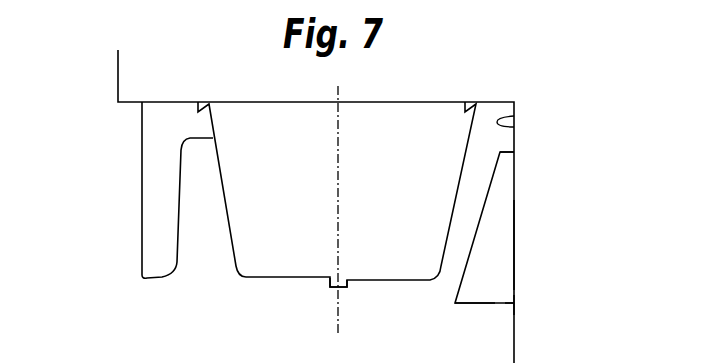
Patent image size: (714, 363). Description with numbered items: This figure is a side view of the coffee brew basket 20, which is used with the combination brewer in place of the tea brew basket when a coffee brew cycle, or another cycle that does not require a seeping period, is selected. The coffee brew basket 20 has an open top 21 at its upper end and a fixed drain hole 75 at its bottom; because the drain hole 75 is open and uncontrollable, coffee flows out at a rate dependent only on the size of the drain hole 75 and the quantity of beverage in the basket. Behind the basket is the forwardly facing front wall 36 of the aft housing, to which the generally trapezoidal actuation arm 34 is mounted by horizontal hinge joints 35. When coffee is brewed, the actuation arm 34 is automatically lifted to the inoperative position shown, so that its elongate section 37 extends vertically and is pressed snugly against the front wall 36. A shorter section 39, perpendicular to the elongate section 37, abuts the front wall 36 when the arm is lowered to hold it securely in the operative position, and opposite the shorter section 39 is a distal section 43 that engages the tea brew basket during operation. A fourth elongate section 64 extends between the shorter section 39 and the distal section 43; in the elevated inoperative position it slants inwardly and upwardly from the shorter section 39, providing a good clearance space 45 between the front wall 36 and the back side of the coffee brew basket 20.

The coffee brew basket 20 is at (411, 110).
The open top 21 is at (148, 184).
The actuation arm 34 is at (551, 291).
The horizontal hinge joints 35 is at (518, 302).
The front wall 36 is at (514, 116).
The elongate section 37 is at (514, 242).
The shorter section 39 is at (482, 308).
The distal section 43 is at (500, 152).
The clearance space 45 is at (467, 205).
The fourth elongate section 64 is at (456, 300).
The drain hole 75 is at (332, 288).